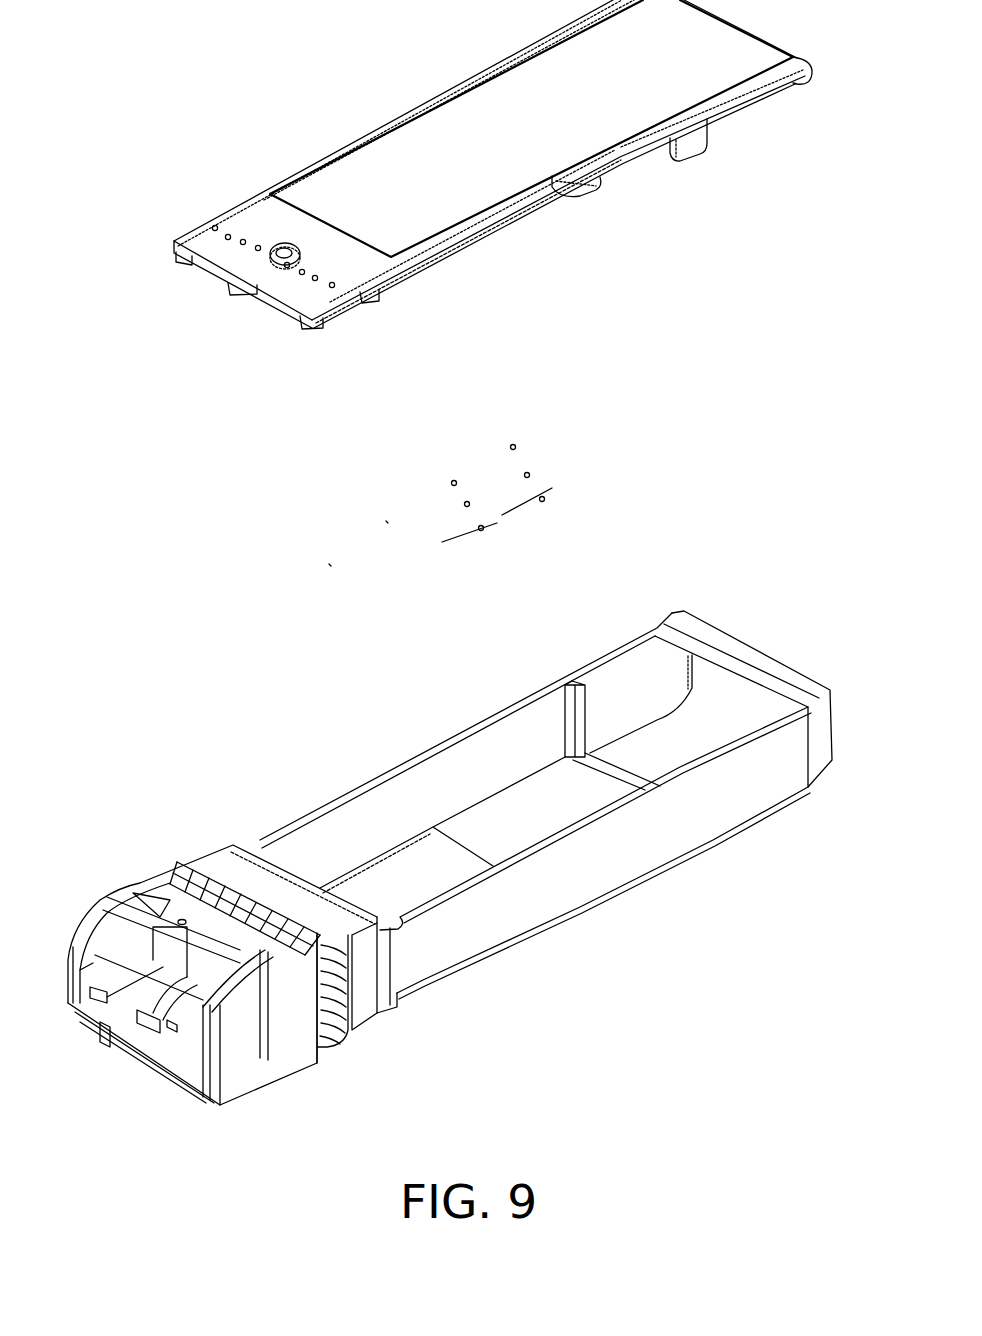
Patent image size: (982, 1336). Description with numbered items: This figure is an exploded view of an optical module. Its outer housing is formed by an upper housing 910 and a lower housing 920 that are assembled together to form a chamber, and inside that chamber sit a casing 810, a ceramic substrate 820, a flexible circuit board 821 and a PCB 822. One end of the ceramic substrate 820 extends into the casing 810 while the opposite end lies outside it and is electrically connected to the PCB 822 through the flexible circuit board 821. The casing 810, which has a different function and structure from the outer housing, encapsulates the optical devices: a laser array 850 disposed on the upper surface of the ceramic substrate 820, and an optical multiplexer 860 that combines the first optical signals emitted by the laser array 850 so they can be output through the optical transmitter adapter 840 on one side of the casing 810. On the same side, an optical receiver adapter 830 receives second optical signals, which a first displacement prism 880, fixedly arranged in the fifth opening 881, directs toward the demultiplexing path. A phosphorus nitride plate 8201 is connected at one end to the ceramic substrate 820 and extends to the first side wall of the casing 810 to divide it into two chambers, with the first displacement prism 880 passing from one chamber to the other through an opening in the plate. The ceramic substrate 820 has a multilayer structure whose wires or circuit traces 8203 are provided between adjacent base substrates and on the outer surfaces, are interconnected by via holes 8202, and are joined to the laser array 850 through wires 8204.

The upper housing 910 is at (427, 130).
The lower housing 920 is at (595, 873).
The ceramic substrate 820 is at (468, 241).
The flexible circuit board 821 is at (590, 239).
The PCB 822 is at (689, 177).
The casing 810 is at (481, 428).
The phosphorus nitride plate 8201 is at (387, 522).
The via holes 8202 is at (455, 480).
The wires or circuit traces 8203 is at (532, 500).
The wires 8204 is at (463, 535).
The optical receiver adapter 830 is at (157, 586).
The optical transmitter adapter 840 is at (243, 761).
The laser array 850 is at (579, 601).
The optical multiplexer 860 is at (498, 641).
The first displacement prism 880 is at (307, 719).
The fifth opening 881 is at (330, 565).